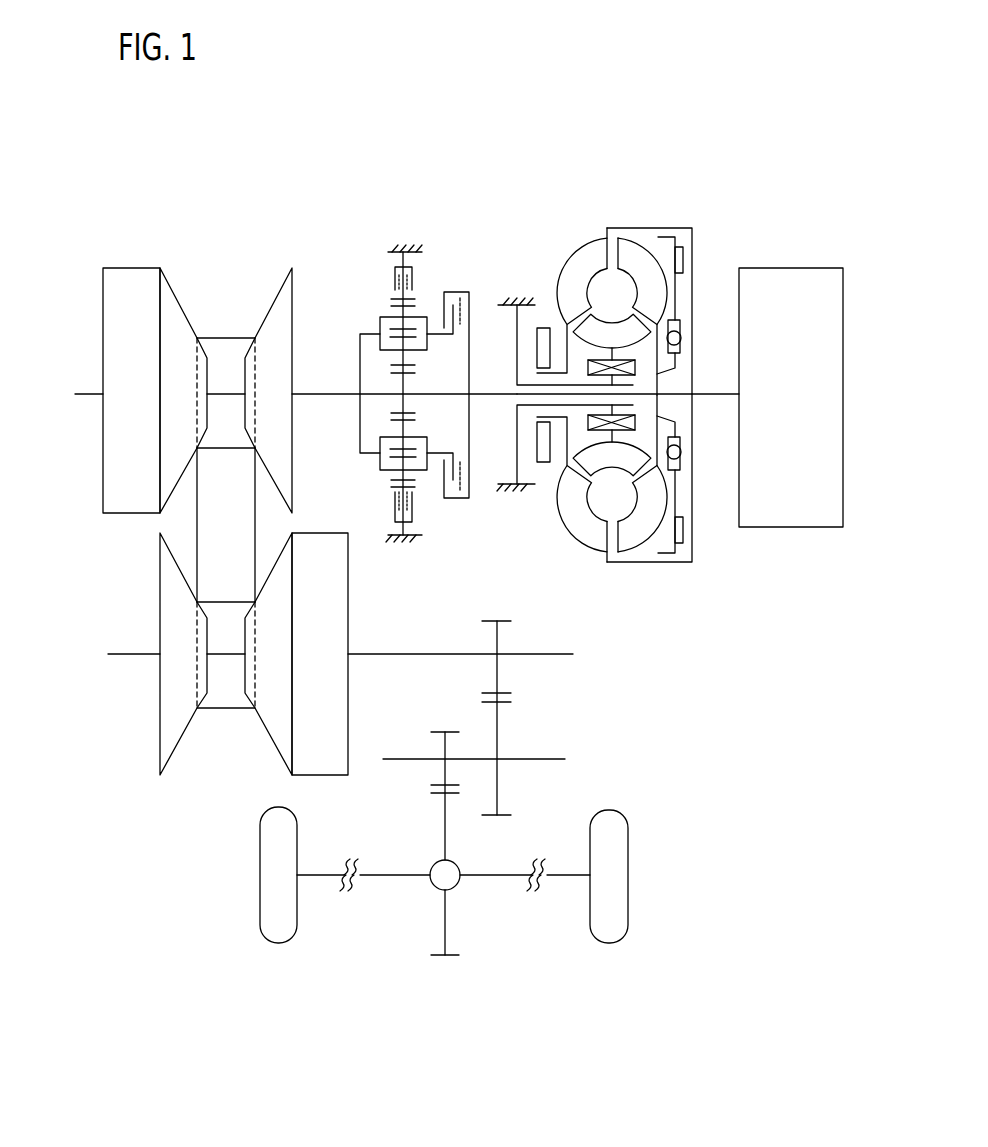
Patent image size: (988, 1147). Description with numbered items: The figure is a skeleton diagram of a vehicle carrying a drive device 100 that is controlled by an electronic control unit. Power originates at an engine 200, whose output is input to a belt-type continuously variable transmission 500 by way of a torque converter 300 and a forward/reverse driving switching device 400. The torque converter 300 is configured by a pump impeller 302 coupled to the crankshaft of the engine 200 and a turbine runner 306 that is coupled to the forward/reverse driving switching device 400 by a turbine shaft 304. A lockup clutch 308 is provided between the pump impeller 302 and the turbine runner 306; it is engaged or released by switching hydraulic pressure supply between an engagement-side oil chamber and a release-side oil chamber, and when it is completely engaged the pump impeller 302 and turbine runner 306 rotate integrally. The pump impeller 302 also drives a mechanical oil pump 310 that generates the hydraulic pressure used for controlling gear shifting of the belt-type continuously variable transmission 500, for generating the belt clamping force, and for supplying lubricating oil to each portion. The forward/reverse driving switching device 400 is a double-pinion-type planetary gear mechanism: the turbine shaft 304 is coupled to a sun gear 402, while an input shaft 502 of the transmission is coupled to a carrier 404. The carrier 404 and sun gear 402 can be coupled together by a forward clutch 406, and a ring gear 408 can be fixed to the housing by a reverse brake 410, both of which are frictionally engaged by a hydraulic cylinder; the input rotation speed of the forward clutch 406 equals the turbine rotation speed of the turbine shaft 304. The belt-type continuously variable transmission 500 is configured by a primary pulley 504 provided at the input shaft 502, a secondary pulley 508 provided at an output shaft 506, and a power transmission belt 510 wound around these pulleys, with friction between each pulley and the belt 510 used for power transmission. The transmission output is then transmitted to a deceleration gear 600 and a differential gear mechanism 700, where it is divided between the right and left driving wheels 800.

The drive device 100 is at (803, 205).
The engine 200 is at (830, 343).
The torque converter 300 is at (618, 210).
The pump impeller 302 is at (580, 525).
The turbine shaft 304 is at (487, 400).
The turbine runner 306 is at (633, 535).
The lockup clutch 308 is at (683, 258).
The mechanical oil pump 310 is at (543, 328).
The forward/reverse driving switching device 400 is at (367, 245).
The sun gear 402 is at (397, 402).
The carrier 404 is at (382, 318).
The forward clutch 406 is at (455, 283).
The ring gear 408 is at (393, 493).
The reverse brake 410 is at (422, 272).
The belt-type continuously variable transmission 500 is at (220, 757).
The input shaft 502 is at (320, 392).
The primary pulley 504 is at (117, 295).
The output shaft 506 is at (403, 657).
The secondary pulley 508 is at (338, 613).
The power transmission belt 510 is at (225, 337).
The deceleration gear 600 is at (558, 723).
The differential gear mechanism 700 is at (435, 882).
The driving wheels 800 is at (263, 898).